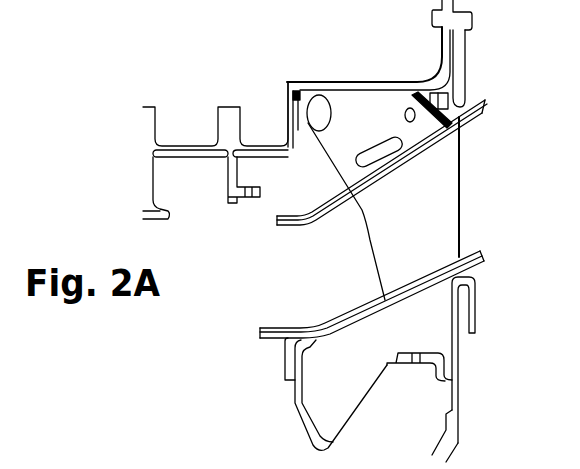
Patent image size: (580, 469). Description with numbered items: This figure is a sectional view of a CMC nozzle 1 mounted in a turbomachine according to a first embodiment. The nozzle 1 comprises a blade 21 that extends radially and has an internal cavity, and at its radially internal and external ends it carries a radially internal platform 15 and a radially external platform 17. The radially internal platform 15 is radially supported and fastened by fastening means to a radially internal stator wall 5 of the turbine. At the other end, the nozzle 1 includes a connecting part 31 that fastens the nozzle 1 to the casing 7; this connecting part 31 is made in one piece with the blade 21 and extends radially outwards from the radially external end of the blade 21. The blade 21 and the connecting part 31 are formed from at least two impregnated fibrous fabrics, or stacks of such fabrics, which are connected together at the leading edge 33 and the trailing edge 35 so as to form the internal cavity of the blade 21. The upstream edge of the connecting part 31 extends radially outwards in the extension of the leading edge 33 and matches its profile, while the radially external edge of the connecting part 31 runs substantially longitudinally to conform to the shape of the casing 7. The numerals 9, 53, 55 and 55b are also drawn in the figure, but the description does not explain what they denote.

The CMC nozzle 1 is at (466, 151).
The radially internal stator wall 5 is at (293, 425).
The casing 7 is at (373, 82).
The body panel 9 is at (7, 442).
The radially internal platform 15 is at (480, 259).
The radially external platform 17 is at (485, 101).
The blade 21 is at (423, 213).
The connecting part 31 is at (350, 123).
The leading edge 33 is at (368, 240).
The trailing edge 35 is at (462, 193).
The lower member 53 is at (77, 468).
The flange 55 is at (51, 436).
The flange portion 55b is at (33, 468).